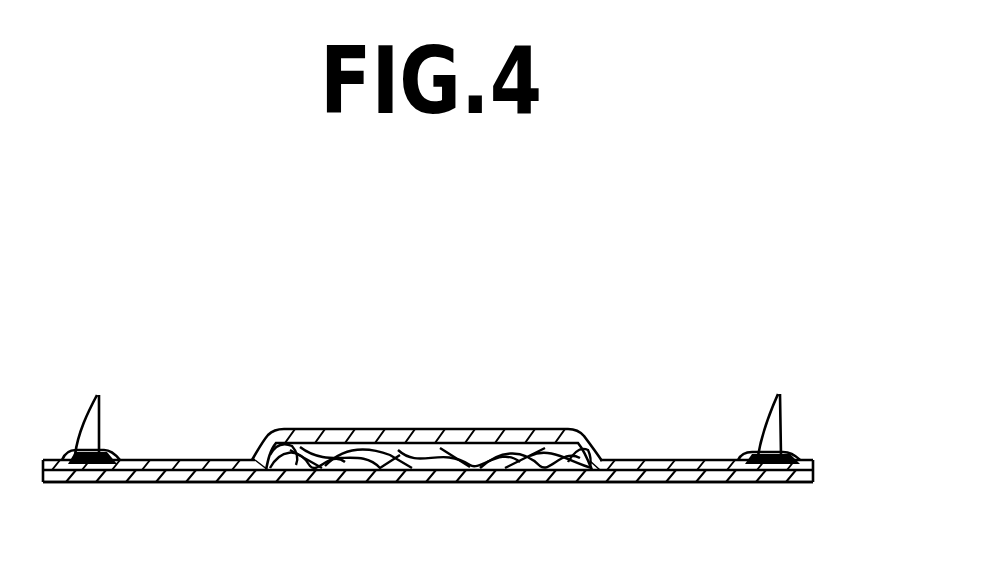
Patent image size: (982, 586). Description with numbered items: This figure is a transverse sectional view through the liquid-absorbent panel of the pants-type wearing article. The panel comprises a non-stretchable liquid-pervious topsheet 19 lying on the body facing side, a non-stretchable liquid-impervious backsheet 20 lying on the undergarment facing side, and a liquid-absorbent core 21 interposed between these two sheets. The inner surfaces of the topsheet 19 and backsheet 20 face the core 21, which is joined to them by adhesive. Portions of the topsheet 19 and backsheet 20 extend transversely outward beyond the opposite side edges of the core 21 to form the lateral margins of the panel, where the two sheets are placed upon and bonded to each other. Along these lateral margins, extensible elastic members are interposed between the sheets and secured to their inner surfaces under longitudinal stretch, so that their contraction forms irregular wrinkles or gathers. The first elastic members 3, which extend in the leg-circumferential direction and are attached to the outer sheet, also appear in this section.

The first elastic members 3 is at (815, 459).
The topsheet 19 is at (470, 433).
The backsheet 20 is at (523, 482).
The liquid-absorbent core 21 is at (410, 468).